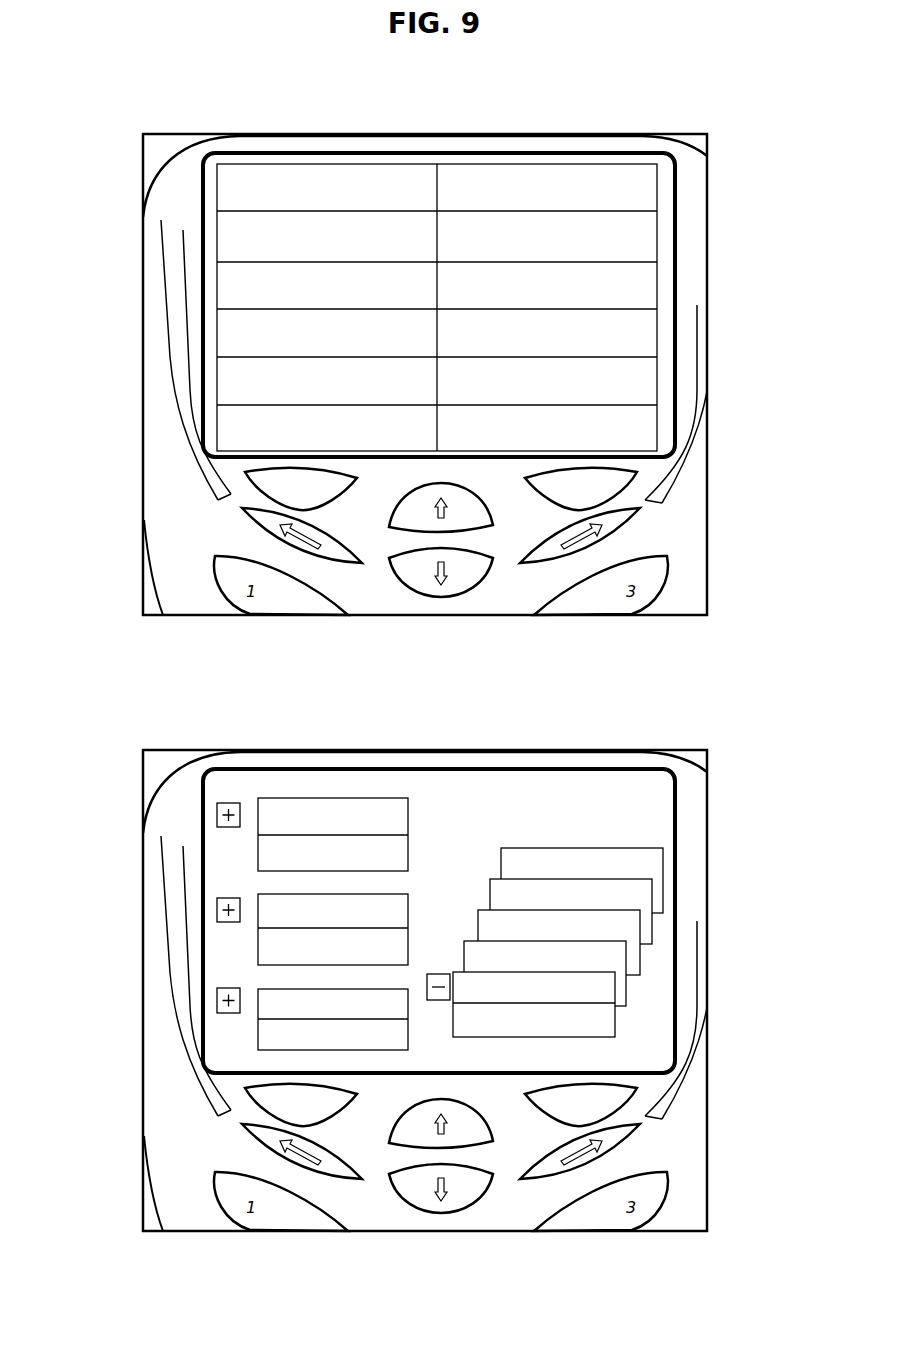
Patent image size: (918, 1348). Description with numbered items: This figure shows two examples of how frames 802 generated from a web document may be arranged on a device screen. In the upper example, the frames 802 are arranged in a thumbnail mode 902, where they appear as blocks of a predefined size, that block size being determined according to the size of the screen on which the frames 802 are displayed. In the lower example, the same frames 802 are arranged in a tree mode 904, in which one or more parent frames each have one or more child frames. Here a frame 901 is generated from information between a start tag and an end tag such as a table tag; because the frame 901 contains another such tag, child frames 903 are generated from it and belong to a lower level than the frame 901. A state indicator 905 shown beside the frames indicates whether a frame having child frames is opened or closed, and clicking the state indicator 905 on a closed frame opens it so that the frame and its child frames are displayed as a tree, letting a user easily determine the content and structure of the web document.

The frames 802 is at (557, 162).
The frame 901 is at (619, 1039).
The thumbnail mode 902 is at (427, 671).
The child frames 903 is at (663, 847).
The tree mode 904 is at (427, 1283).
The state indicator 905 is at (214, 989).